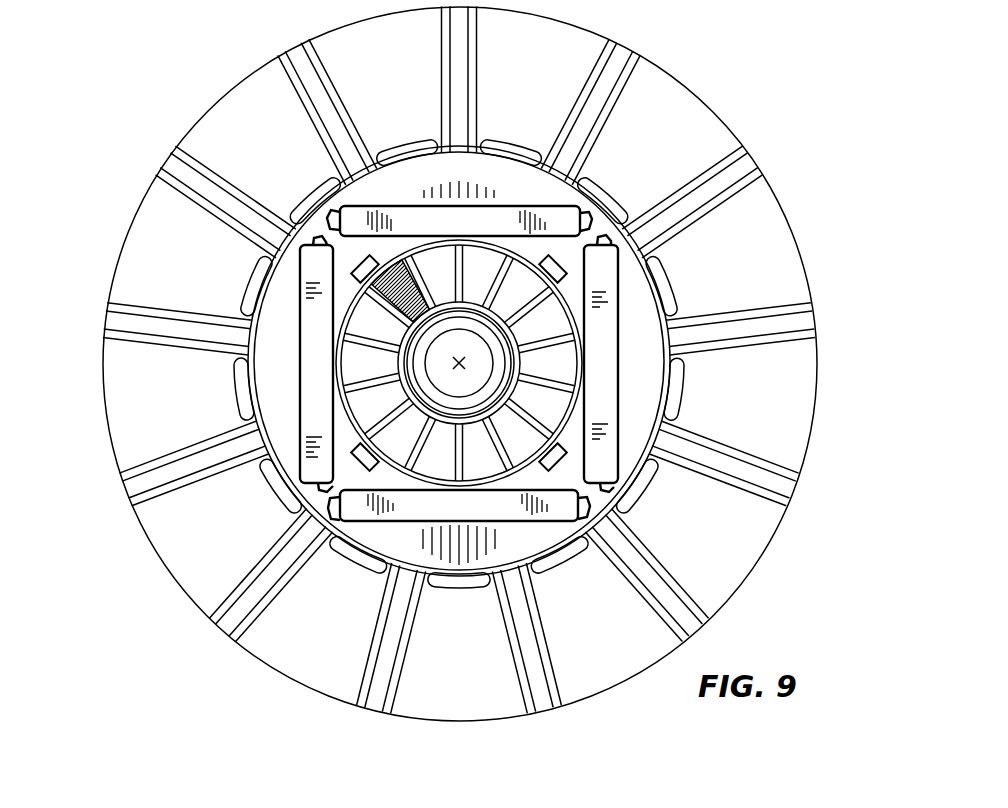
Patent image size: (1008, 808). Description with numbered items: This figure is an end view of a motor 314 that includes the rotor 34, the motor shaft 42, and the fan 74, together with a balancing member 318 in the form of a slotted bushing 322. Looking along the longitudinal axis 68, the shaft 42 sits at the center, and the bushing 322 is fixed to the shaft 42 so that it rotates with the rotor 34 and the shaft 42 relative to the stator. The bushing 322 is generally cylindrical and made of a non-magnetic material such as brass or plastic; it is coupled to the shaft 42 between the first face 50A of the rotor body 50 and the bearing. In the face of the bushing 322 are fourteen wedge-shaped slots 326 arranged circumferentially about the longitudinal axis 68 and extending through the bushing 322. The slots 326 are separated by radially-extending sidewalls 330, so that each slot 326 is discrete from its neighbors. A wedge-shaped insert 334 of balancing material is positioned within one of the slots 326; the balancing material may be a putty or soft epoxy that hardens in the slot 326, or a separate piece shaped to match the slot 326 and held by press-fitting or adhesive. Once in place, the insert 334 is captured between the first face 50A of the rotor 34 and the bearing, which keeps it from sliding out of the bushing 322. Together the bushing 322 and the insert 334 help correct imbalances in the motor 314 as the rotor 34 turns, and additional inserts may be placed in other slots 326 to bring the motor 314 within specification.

The motor 314 is at (733, 68).
The fan 74 is at (200, 538).
The first face 50A is at (633, 443).
The radially-extending sidewalls 330 is at (307, 216).
The rotor body 50 is at (273, 368).
The slotted bushing 322 is at (492, 240).
The balancing member 318 is at (428, 503).
The slots 326 is at (300, 270).
The rotor 34 is at (552, 383).
The wedge-shaped insert 334 is at (377, 266).
The longitudinal axis 68 is at (463, 372).
The motor shaft 42 is at (470, 372).